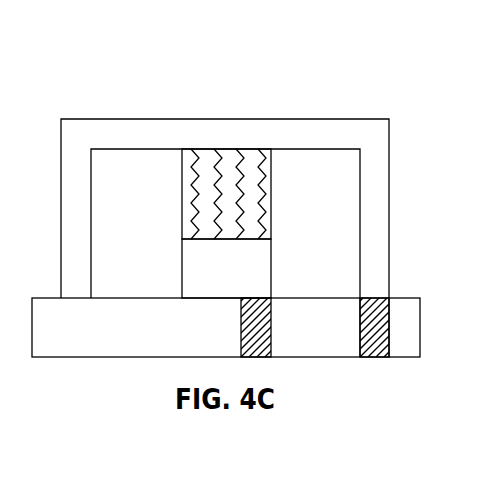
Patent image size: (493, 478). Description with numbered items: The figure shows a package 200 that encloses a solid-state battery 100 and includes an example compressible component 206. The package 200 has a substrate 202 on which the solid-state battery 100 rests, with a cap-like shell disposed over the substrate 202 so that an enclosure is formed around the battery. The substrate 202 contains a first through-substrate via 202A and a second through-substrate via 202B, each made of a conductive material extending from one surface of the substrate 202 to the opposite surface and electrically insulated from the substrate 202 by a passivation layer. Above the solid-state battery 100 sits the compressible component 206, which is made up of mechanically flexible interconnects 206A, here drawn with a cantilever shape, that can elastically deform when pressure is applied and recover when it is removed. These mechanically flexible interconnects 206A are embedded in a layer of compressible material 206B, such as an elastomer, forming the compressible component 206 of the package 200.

The package 200 is at (46, 96).
The substrate 202 is at (226, 327).
The first through-substrate via 202A is at (248, 318).
The second through-substrate via 202B is at (367, 330).
The solid-state battery 100 is at (226, 268).
The compressible component 206 is at (256, 152).
The mechanically flexible interconnect 206A is at (201, 165).
The layer of compressible material 206B is at (267, 154).